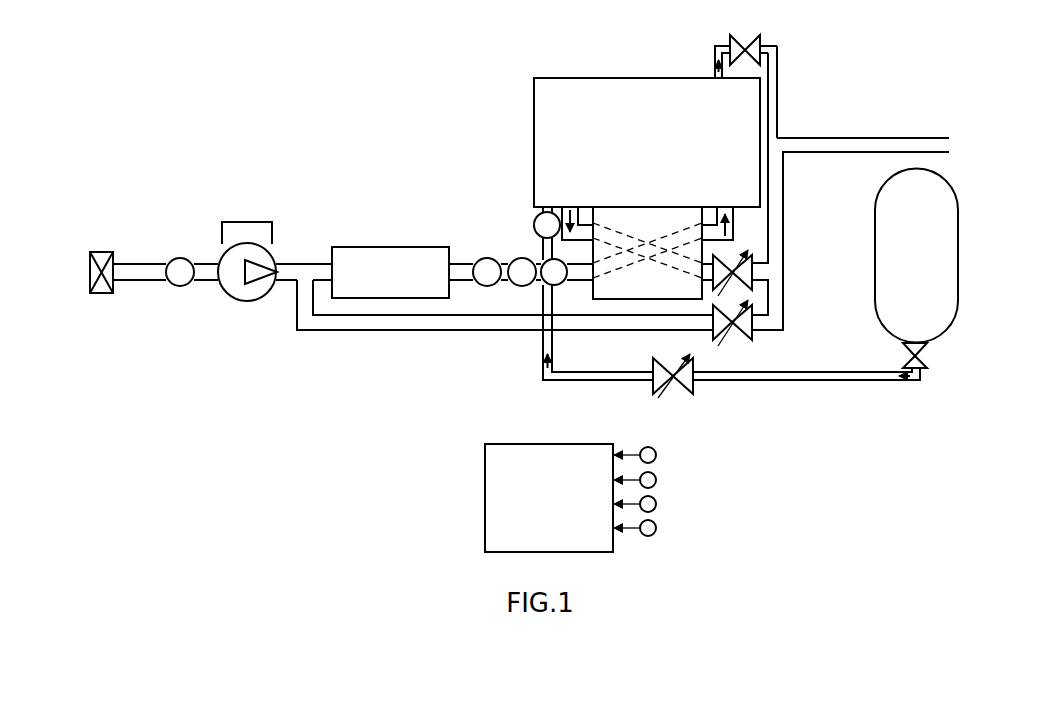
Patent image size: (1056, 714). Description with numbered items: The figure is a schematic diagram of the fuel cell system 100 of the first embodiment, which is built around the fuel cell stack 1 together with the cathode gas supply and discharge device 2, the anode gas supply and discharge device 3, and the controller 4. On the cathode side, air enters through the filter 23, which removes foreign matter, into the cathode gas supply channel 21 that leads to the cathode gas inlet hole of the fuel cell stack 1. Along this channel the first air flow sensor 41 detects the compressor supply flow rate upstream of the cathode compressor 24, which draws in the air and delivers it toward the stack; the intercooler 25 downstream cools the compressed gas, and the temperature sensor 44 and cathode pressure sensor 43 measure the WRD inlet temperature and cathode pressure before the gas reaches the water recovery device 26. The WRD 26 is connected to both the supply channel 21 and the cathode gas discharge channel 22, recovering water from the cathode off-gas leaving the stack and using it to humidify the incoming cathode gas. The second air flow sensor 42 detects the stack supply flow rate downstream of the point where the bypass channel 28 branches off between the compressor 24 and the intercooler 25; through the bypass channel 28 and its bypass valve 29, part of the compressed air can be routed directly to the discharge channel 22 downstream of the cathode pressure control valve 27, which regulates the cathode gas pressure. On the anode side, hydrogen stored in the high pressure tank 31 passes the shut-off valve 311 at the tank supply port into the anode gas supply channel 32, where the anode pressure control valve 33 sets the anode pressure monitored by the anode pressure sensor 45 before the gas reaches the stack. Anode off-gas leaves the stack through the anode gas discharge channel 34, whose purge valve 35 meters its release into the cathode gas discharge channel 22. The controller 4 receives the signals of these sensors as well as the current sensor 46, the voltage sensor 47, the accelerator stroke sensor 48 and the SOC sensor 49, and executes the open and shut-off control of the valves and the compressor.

The fuel cell system 100 is at (208, 78).
The fuel cell stack 1 is at (630, 78).
The cathode gas supply and discharge device 2 is at (191, 195).
The anode gas supply and discharge device 3 is at (862, 396).
The controller 4 is at (485, 475).
The cathode gas supply channel 21 is at (152, 262).
The cathode gas discharge channel 22 is at (580, 240).
The filter 23 is at (104, 293).
The cathode compressor 24 is at (247, 301).
The intercooler 25 is at (392, 247).
The water recovery device (WRD) 26 is at (593, 299).
The cathode pressure control valve 27 is at (752, 287).
The bypass channel 28 is at (478, 340).
The bypass valve 29 is at (752, 340).
The high pressure tank 31 is at (958, 190).
The shut-off valve 311 is at (930, 360).
The anode gas supply channel 32 is at (790, 385).
The anode pressure control valve 33 is at (690, 395).
The anode gas discharge channel 34 is at (777, 65).
The purge valve 35 is at (730, 45).
The first air flow sensor 41 is at (180, 286).
The second air flow sensor 42 is at (546, 260).
The cathode pressure sensor 43 is at (512, 259).
The temperature sensor 44 is at (480, 258).
The anode pressure sensor 45 is at (540, 213).
The current sensor 46 is at (656, 455).
The voltage sensor 47 is at (656, 480).
The accelerator stroke sensor 48 is at (656, 504).
The SOC sensor 49 is at (656, 528).